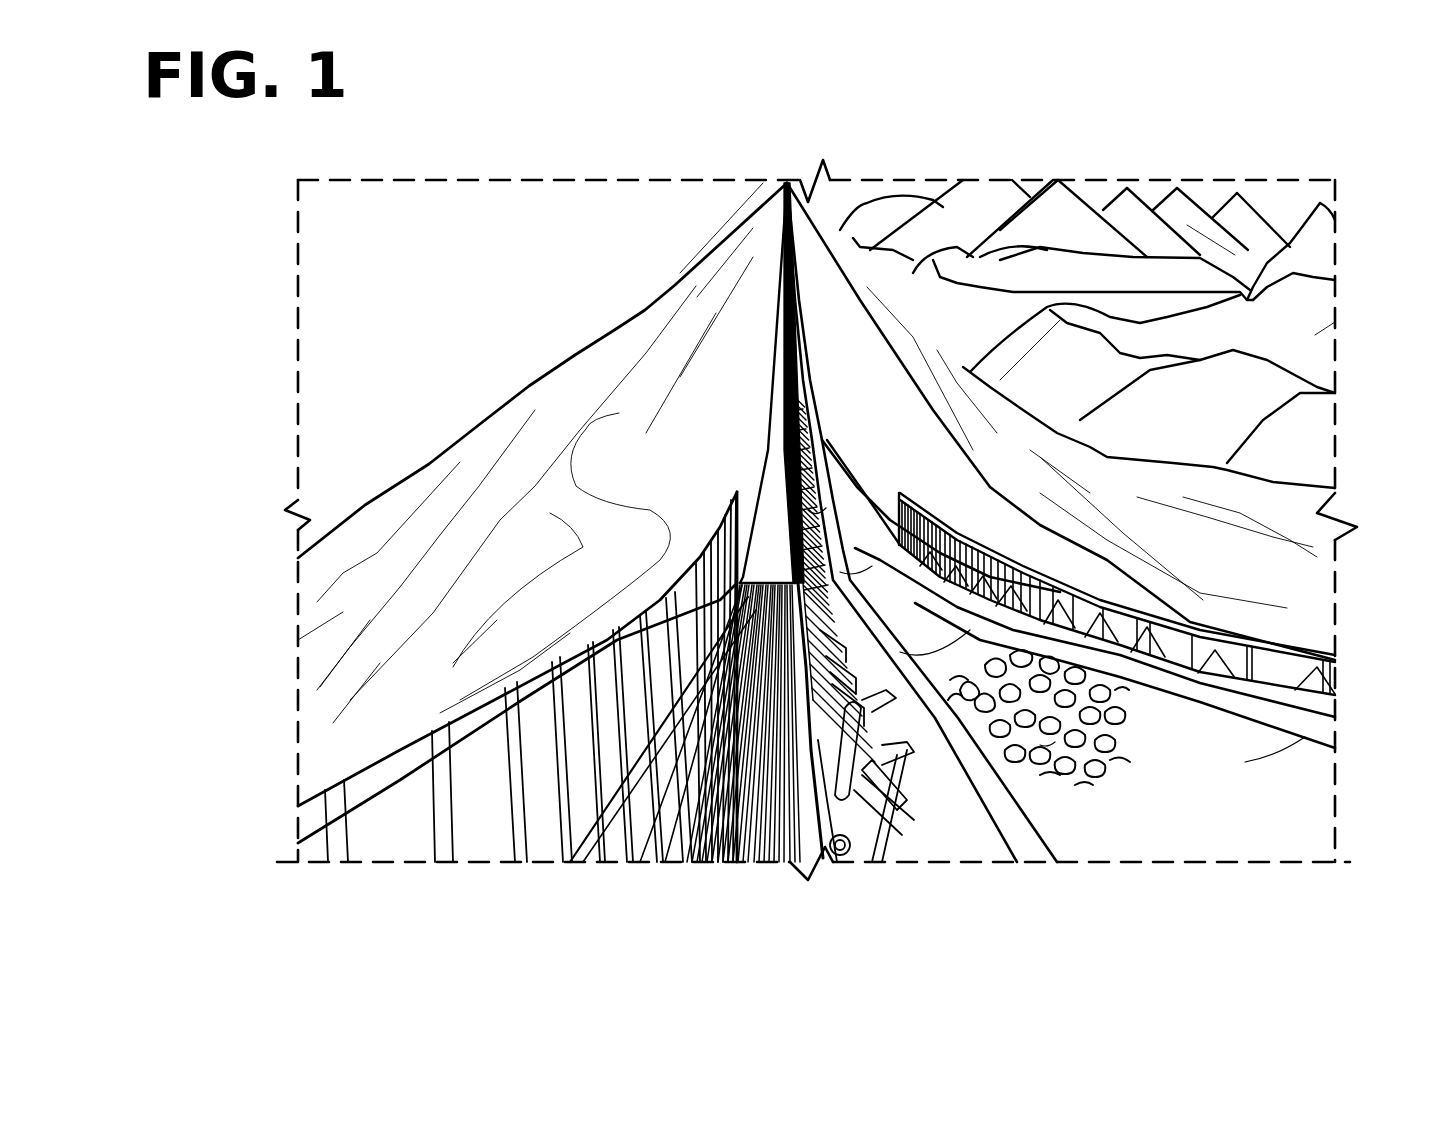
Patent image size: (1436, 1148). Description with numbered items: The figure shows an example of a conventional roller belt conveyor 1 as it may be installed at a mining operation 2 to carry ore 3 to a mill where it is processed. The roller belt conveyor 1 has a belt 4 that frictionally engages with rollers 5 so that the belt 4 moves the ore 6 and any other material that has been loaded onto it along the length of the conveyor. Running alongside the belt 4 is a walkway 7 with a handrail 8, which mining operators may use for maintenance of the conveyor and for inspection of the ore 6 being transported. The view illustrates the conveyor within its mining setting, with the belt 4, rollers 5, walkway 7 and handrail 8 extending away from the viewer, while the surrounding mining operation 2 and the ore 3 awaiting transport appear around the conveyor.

The roller belt conveyor 1 is at (1035, 880).
The mining operation 2 is at (670, 295).
The ore 3 is at (1160, 183).
The belt 4 is at (1317, 745).
The rollers 5 is at (897, 850).
The ore 6 is at (1107, 725).
The walkway 7 is at (700, 860).
The handrail 8 is at (383, 763).